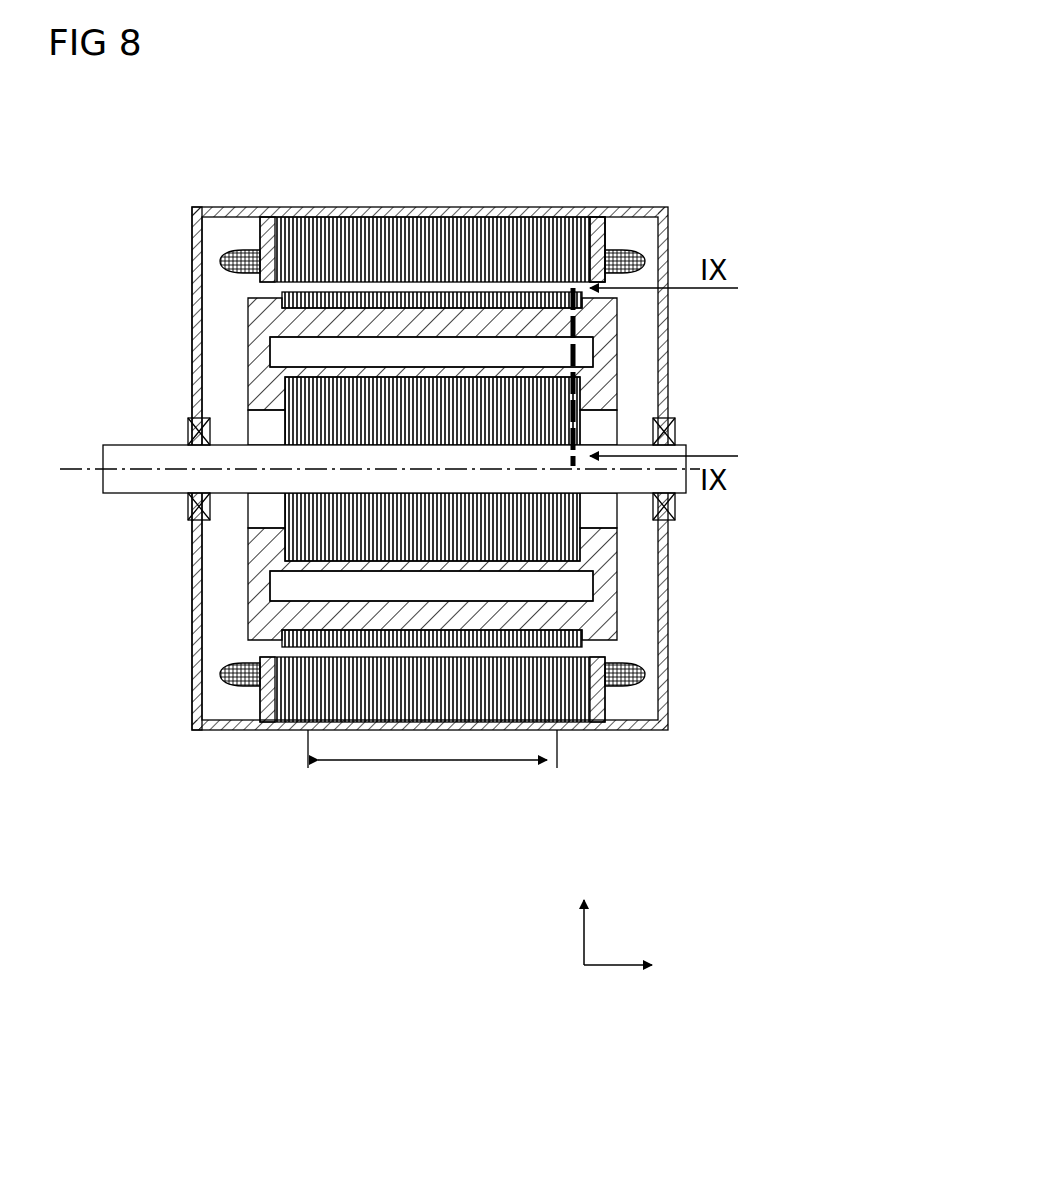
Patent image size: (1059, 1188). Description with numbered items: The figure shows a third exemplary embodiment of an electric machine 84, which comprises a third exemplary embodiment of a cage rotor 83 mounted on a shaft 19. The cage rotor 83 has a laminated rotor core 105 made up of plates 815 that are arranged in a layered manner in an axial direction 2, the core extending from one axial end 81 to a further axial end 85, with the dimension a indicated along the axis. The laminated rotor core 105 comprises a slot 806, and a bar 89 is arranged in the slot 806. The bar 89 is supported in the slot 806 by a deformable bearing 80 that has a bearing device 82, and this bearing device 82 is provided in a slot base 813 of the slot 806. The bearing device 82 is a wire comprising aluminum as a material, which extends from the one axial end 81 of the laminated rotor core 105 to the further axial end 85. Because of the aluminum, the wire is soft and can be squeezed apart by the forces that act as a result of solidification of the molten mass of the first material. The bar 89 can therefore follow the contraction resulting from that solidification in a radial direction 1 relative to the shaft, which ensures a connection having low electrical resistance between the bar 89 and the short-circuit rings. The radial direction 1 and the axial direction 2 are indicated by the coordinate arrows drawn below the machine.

The electric machine 84 is at (672, 105).
The cage rotor 83 is at (232, 296).
The axial end 81 is at (288, 280).
The further axial end 85 is at (580, 268).
The deformable bearing 80 is at (444, 399).
The slot 806 is at (336, 298).
The slot base 813 is at (397, 372).
The bar 89 is at (247, 350).
The plates 815 is at (614, 548).
The laminated rotor core 105 is at (278, 510).
The bearing device 82 is at (557, 352).
The shaft 19 is at (70, 468).
The axial length a is at (425, 762).
The radial direction 1 is at (584, 940).
The axial direction 2 is at (608, 966).